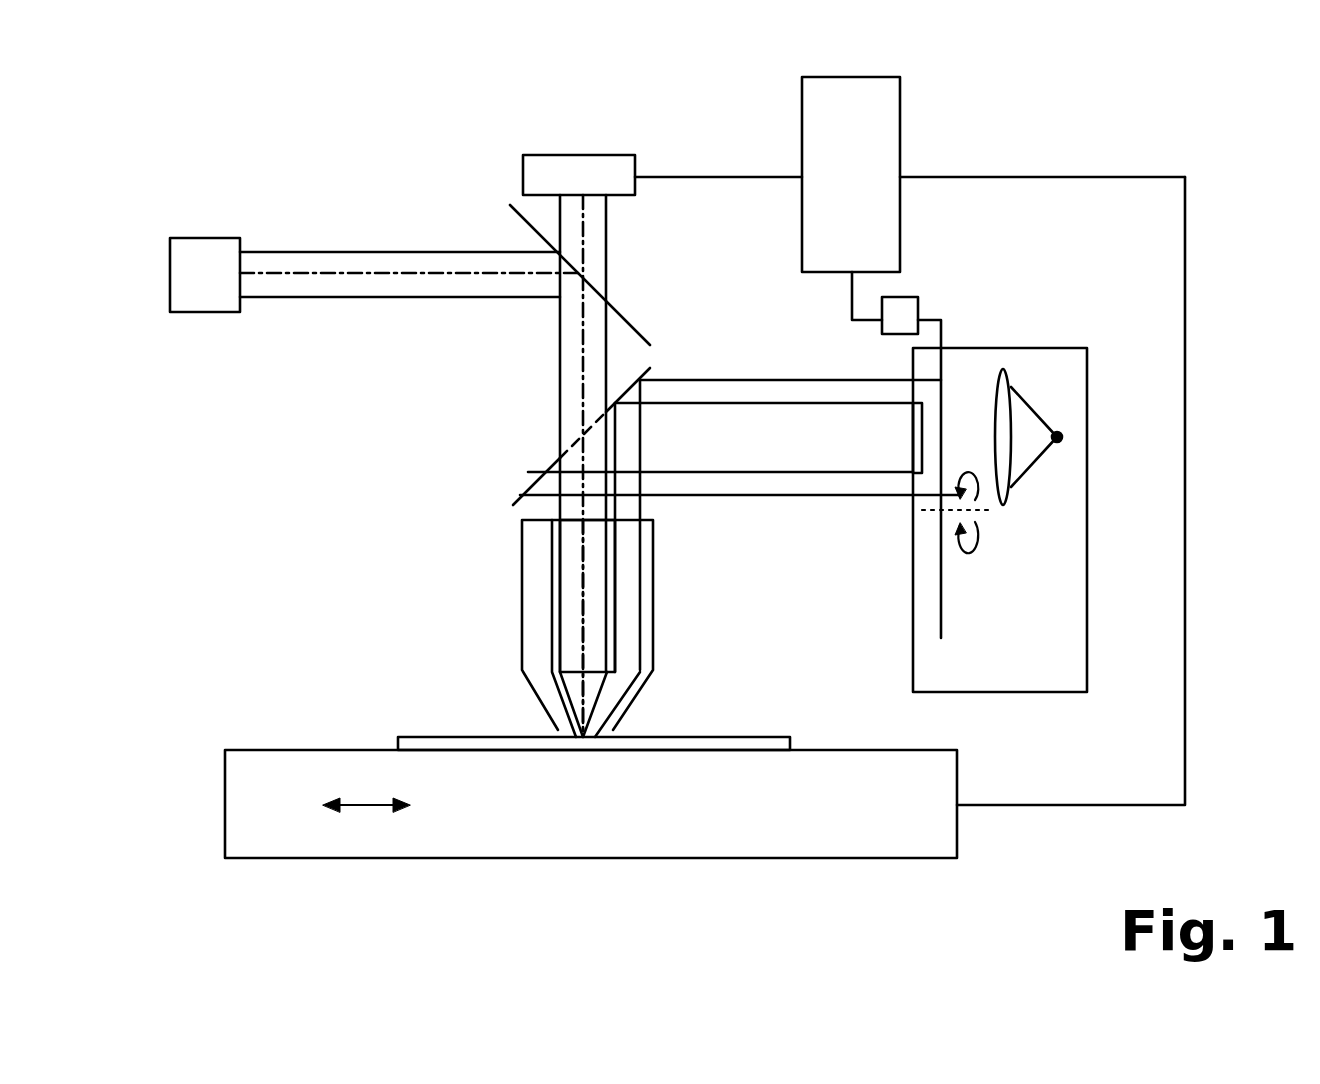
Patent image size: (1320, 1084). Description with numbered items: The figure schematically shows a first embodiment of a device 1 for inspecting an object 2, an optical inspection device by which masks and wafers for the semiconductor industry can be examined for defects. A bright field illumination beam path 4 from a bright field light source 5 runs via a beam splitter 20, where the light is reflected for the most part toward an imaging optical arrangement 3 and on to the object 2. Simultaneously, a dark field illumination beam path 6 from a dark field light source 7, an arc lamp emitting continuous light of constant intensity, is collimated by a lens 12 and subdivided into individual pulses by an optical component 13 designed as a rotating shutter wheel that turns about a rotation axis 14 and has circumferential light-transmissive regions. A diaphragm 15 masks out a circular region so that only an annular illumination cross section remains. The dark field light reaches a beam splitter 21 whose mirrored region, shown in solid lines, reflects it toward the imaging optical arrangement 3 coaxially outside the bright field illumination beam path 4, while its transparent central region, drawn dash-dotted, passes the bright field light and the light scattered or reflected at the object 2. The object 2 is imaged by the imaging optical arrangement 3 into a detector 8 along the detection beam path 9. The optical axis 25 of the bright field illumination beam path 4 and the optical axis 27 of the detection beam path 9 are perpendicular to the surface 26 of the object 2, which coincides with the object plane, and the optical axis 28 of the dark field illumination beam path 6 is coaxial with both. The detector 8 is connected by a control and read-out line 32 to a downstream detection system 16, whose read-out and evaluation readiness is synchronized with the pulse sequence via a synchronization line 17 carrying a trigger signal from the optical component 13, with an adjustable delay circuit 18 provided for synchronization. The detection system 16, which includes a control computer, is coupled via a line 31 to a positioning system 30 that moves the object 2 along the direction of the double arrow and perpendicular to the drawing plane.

The device 1 is at (232, 440).
The object 2 is at (397, 750).
The imaging optical arrangement 3 is at (522, 600).
The bright field illumination beam path 4 is at (368, 257).
The bright field light source 5 is at (218, 304).
The dark field illumination beam path 6 is at (542, 635).
The dark field light source 7 is at (1059, 441).
The detector 8 is at (583, 155).
The detection beam path 9 is at (597, 253).
The lens 12 is at (1015, 388).
The optical component 13 is at (945, 613).
The rotation axis 14 is at (975, 520).
The diaphragm 15 is at (913, 438).
The detection system 16 is at (882, 204).
The synchronization line 17 is at (852, 290).
The delay circuit 18 is at (900, 297).
The beam splitter 20 is at (510, 207).
The beam splitter 21 is at (524, 482).
The optical axis 25 is at (310, 273).
The surface 26 is at (420, 737).
The optical axis 27 is at (585, 240).
The optical axis 28 is at (583, 550).
The positioning system 30 is at (866, 828).
The line 31 is at (1193, 405).
The control and read-out line 32 is at (747, 177).